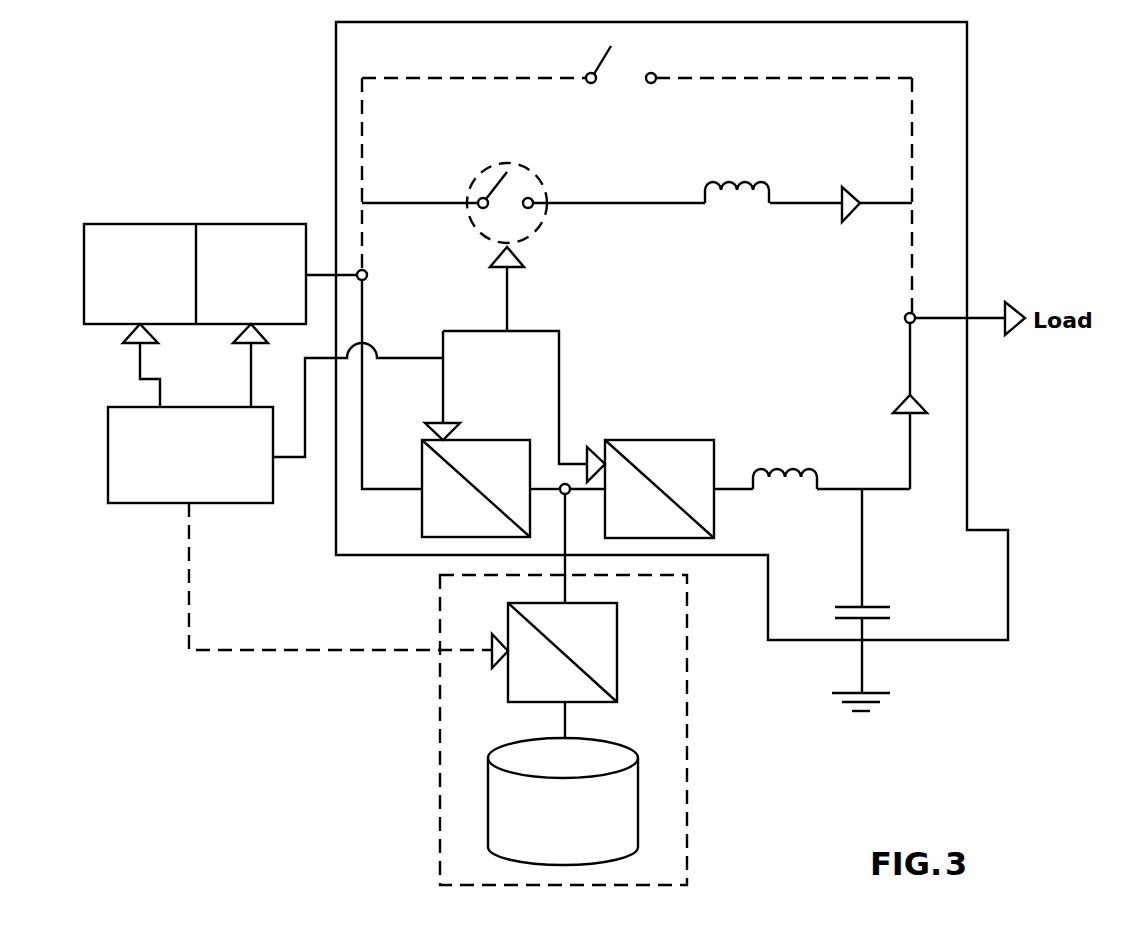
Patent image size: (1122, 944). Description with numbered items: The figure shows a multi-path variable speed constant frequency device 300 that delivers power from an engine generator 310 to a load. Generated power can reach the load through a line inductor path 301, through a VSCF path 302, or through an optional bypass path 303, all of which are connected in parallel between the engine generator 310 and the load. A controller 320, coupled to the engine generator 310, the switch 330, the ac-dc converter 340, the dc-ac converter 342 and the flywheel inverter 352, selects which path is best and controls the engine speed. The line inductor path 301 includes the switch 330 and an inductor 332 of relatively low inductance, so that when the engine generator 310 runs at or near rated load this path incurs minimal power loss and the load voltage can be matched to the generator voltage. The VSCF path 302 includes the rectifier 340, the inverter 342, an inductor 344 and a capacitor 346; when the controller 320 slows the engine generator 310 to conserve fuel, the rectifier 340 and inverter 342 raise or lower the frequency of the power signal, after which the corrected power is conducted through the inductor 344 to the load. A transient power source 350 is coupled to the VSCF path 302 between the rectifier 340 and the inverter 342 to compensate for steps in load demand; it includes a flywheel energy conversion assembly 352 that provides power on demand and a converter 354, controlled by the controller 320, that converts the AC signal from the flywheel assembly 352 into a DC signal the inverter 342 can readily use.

The multi-path variable speed constant frequency device 300 is at (967, 107).
The line inductor path 301 is at (597, 203).
The VSCF path 302 is at (840, 489).
The optional bypass path 303 is at (521, 78).
The engine generator 310 is at (168, 224).
The controller 320 is at (139, 507).
The switch 330 is at (521, 162).
The inductor 332 is at (740, 182).
The ac-dc converter (rectifier) 340 is at (498, 440).
The dc-ac converter (inverter) 342 is at (688, 440).
The inductor 344 is at (790, 469).
The capacitor 346 is at (892, 612).
The transient power source 350 is at (592, 730).
The flywheel energy conversion assembly 352 is at (625, 740).
The converter 354 is at (617, 639).